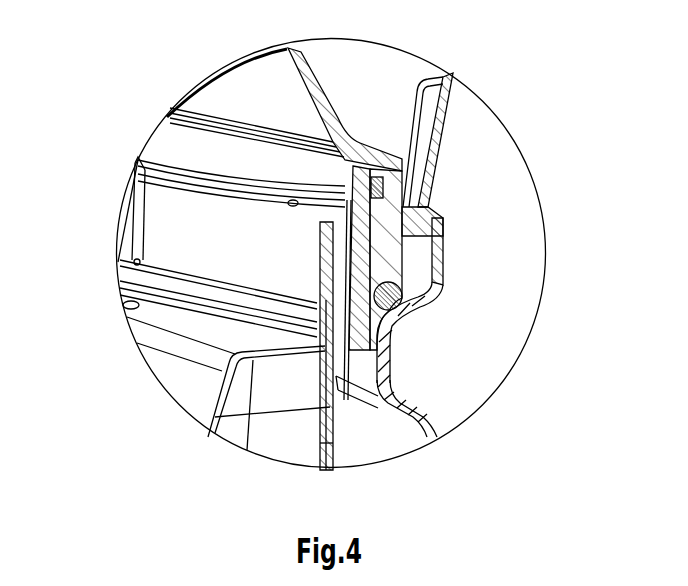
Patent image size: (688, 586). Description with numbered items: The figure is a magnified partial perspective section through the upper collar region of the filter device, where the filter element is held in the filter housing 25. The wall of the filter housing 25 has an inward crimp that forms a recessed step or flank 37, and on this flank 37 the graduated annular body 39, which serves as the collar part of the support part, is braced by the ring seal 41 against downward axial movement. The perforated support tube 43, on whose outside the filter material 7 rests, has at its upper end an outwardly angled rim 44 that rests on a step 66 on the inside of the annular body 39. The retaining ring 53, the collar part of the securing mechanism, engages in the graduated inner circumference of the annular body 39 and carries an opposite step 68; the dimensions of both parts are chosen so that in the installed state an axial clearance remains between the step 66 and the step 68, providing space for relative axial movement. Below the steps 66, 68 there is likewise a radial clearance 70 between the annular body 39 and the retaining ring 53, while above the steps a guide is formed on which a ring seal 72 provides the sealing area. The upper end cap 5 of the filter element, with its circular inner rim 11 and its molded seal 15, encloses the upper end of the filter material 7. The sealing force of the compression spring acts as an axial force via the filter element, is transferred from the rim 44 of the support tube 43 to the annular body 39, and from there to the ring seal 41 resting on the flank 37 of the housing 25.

The upper end cap 5 is at (183, 317).
The filter material 7 is at (280, 423).
The inner rim 11 is at (210, 400).
The seal 15 is at (313, 358).
The filter housing 25 is at (447, 433).
The flank 37 is at (400, 309).
The graduated annular body 39 is at (405, 232).
The ring seal 41 is at (397, 317).
The support tube 43 is at (333, 453).
The outwardly angled rim 44 is at (433, 205).
The retaining ring 53 is at (200, 143).
The step 66 is at (407, 260).
The step 68 is at (365, 195).
The radial clearance 70 is at (340, 265).
The ring seal 72 is at (445, 124).